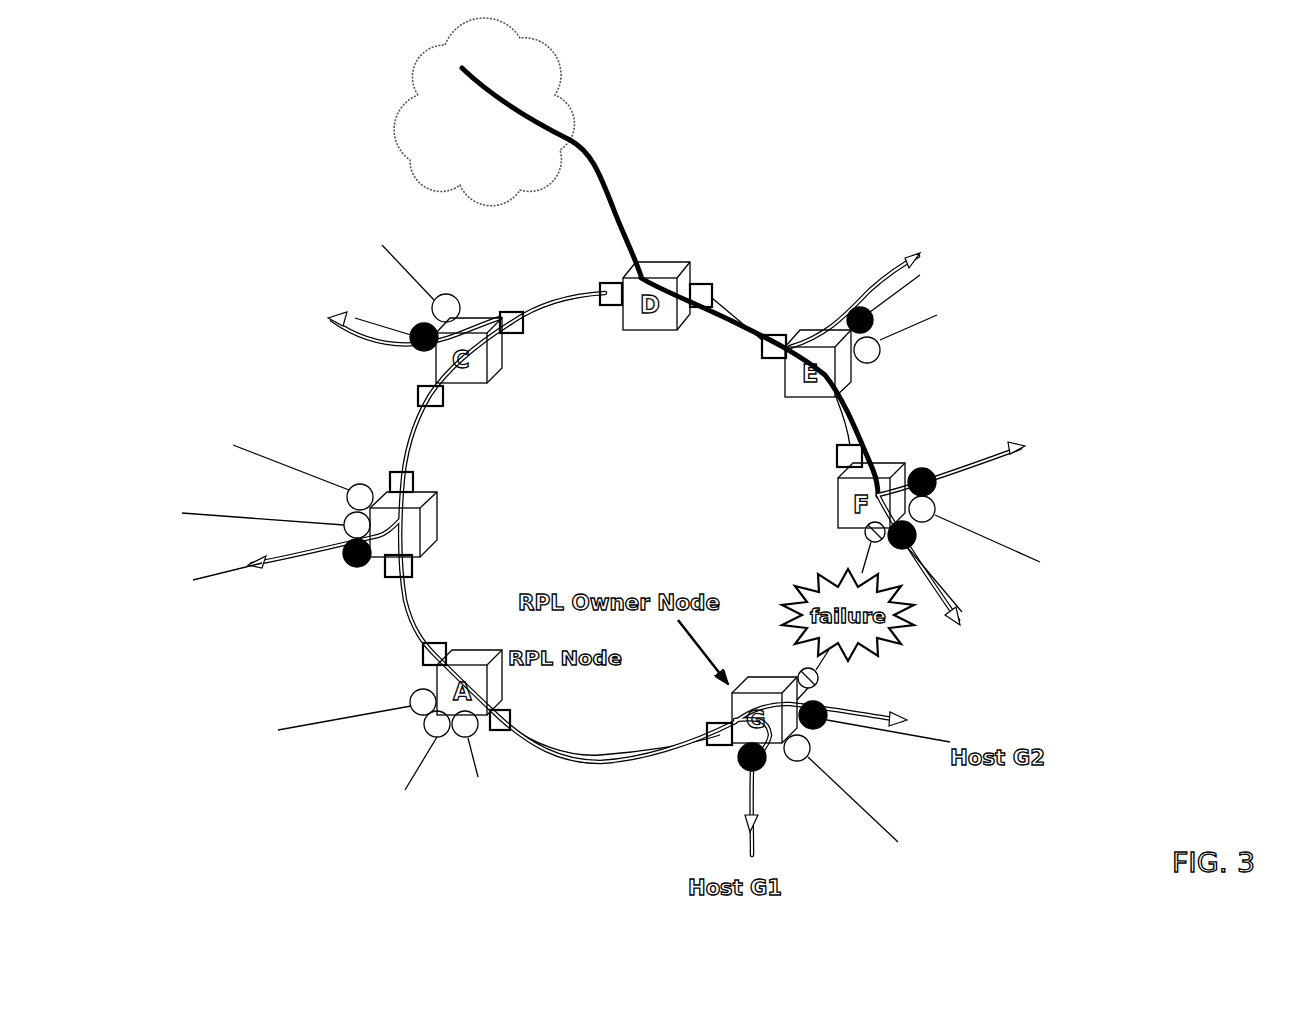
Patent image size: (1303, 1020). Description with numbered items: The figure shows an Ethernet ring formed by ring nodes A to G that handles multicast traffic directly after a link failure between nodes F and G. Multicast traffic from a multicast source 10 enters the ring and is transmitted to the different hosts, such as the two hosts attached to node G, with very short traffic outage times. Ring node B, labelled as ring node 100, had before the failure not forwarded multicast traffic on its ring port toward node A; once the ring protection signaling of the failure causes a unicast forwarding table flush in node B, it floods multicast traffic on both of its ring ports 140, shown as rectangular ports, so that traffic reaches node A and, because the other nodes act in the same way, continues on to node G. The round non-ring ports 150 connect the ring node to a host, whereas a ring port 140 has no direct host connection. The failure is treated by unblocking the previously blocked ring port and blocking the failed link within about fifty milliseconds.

The multicast source 10 is at (495, 100).
The ring node 100 is at (440, 505).
The ring port 140 is at (415, 480).
The non-ring port 150 is at (362, 483).